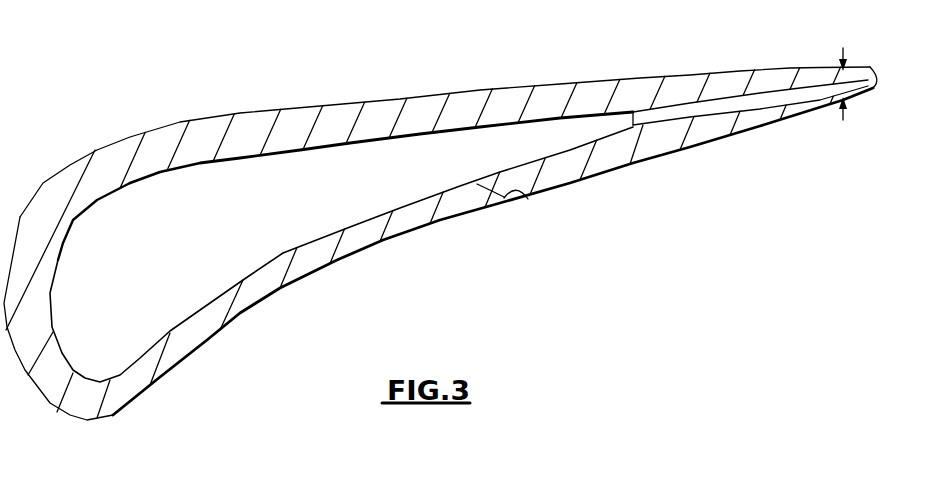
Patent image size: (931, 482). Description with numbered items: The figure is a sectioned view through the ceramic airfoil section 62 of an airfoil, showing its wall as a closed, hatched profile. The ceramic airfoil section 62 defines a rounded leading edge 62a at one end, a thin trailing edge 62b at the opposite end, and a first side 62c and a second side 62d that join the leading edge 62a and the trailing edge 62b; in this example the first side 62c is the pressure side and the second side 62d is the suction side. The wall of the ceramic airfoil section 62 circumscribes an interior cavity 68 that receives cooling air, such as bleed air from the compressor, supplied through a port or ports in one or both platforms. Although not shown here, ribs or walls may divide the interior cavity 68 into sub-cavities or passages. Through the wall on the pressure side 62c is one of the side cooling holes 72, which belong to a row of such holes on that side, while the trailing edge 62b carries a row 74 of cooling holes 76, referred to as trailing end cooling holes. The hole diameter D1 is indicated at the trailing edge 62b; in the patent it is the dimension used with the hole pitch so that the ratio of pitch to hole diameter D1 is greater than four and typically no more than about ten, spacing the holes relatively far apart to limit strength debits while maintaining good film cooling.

The ceramic airfoil section 62 is at (450, 247).
The leading edge 62a is at (44, 402).
The trailing edge 62b is at (877, 88).
The first side 62c is at (217, 332).
The second side 62d is at (174, 121).
The interior cavity 68 is at (235, 234).
The cooling holes 72 is at (518, 194).
The row of cooling holes 74 is at (713, 96).
The cooling holes 76 is at (740, 113).
The hole diameter D1 is at (845, 54).